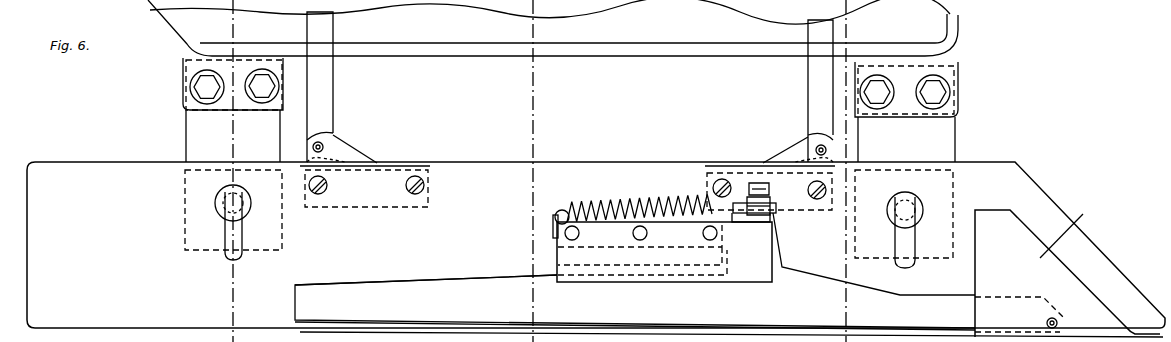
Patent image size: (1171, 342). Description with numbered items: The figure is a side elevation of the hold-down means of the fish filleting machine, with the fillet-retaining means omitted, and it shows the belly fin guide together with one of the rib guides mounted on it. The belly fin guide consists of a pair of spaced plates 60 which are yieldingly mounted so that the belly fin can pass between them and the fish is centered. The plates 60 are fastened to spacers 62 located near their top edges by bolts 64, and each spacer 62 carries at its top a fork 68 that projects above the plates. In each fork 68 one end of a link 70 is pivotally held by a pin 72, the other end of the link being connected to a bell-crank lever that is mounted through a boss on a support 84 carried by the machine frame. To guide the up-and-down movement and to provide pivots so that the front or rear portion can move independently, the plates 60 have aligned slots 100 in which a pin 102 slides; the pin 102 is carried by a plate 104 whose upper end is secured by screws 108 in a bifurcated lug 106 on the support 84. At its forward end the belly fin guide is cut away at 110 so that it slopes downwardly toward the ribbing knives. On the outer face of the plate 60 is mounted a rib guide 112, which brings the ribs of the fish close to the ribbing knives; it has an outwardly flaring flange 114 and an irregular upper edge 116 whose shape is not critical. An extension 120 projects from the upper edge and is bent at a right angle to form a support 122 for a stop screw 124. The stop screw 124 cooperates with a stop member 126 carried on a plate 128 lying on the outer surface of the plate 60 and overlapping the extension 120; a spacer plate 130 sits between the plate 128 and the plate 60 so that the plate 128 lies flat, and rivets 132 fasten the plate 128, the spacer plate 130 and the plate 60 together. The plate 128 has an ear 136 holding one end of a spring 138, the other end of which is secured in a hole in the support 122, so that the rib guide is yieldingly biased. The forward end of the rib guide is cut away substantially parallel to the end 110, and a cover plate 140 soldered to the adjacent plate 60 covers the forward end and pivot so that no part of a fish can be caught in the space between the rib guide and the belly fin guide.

The plates 60 is at (57, 163).
The spacers 62 is at (394, 166).
The bolts 64 is at (405, 185).
The fork 68 is at (343, 150).
The link 70 is at (333, 77).
The pin 72 is at (308, 146).
The support 84 is at (483, 57).
The slots 100 is at (227, 256).
The pin 102 is at (222, 197).
The plate 104 is at (188, 133).
The bifurcated lug 106 is at (183, 86).
The screws 108 is at (258, 98).
The cut-away forward end 110 is at (1097, 251).
The rib guide 112 is at (368, 290).
The flange 114 is at (665, 325).
The upper edge 116 is at (452, 277).
The extension 120 is at (781, 248).
The support 122 is at (778, 207).
The stop screw 124 is at (770, 190).
The stop member 126 is at (753, 226).
The plate 128 is at (635, 277).
The spacer plate 130 is at (600, 243).
The rivets 132 is at (702, 233).
The ear 136 is at (552, 228).
The spring 138 is at (625, 208).
The cover plate 140 is at (1070, 228).